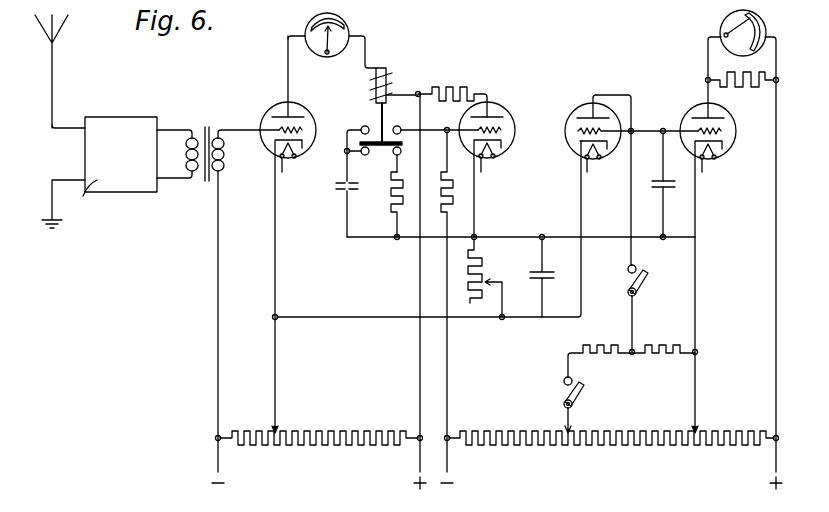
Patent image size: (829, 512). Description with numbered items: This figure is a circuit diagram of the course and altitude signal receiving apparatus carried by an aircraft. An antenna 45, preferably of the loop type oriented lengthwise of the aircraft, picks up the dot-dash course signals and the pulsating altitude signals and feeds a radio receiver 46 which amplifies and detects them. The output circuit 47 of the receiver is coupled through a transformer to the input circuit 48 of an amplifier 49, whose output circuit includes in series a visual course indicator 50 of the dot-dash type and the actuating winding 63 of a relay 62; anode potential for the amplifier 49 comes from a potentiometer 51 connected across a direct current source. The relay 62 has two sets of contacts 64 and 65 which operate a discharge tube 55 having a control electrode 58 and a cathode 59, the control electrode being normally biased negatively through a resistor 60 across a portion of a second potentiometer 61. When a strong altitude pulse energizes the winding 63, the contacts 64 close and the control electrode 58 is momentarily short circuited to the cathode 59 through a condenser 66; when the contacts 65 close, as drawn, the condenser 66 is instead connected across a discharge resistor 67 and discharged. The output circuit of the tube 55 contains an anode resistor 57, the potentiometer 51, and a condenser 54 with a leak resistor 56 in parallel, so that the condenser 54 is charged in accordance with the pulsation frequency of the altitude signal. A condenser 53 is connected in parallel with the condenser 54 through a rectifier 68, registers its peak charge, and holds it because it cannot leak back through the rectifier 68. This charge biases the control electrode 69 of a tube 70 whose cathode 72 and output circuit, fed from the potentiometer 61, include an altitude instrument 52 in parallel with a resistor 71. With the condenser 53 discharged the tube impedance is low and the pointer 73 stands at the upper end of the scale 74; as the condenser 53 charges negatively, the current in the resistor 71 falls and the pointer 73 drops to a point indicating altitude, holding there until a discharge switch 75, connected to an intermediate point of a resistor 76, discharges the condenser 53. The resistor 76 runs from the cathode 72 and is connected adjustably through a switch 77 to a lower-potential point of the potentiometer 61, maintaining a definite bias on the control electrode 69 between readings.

The antenna 45 is at (62, 28).
The radio receiver 46 is at (112, 166).
The output circuit 47 is at (186, 166).
The input circuit 48 is at (226, 160).
The amplifier 49 is at (274, 110).
The visual course indicator 50 is at (318, 50).
The potentiometer 51 is at (343, 421).
The altitude instrument 52 is at (740, 239).
The condenser 53 is at (663, 178).
The condenser 54 is at (548, 272).
The discharge device or tube 55 is at (479, 162).
The leak resistor 56 is at (483, 268).
The anode resistor 57 is at (437, 88).
The control electrode 58 is at (501, 130).
The cathode 59 is at (501, 141).
The resistor 60 is at (445, 211).
The potentiometer 61 is at (636, 432).
The relay 62 is at (376, 105).
The actuating winding 63 is at (390, 74).
The contacts 64 is at (369, 128).
The contacts 65 is at (395, 156).
The condenser 66 is at (345, 194).
The discharge resistor 67 is at (391, 210).
The rectifier 68 is at (579, 97).
The control electrode 69 is at (721, 132).
The space discharge device or tube 70 is at (712, 235).
The resistor 71 is at (742, 90).
The cathode 72 is at (722, 149).
The pointer 73 is at (724, 33).
The scale 74 is at (756, 23).
The discharge switch 75 is at (645, 285).
The resistor 76 is at (641, 358).
The switch 77 is at (586, 400).